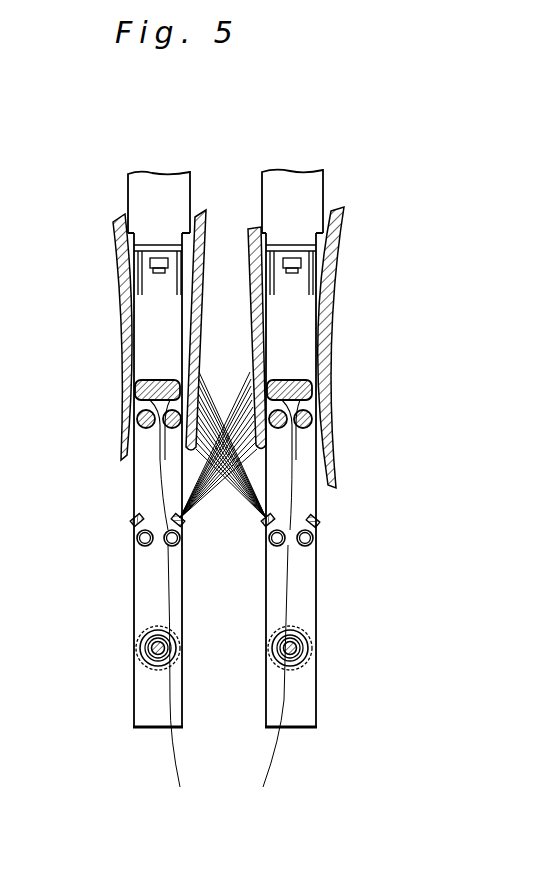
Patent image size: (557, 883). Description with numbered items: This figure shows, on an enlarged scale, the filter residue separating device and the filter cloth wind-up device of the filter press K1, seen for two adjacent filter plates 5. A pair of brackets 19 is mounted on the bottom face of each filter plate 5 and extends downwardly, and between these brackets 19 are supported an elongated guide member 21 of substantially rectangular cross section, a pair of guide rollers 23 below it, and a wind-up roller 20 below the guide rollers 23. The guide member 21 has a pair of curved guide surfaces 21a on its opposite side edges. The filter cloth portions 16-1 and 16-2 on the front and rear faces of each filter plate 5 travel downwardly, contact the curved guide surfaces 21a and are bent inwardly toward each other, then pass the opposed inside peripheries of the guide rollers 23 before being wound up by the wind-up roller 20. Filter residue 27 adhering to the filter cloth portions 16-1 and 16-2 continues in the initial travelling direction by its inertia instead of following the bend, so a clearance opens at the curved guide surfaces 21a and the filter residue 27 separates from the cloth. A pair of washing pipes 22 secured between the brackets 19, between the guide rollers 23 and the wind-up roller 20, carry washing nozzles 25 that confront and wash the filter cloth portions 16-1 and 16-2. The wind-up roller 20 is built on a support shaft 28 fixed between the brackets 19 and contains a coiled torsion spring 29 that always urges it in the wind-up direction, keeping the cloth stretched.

The filter plate 5 is at (140, 192).
The filter residue 27 is at (208, 216).
The bracket 19 is at (148, 311).
The guide member 21 is at (150, 376).
The curved guide surface 21a is at (147, 318).
The guide roller 23 is at (322, 421).
The filter press K1 is at (345, 455).
The filter cloth portion 16-1 is at (163, 455).
The filter cloth portion 16-2 is at (333, 277).
The washing nozzle 25 is at (132, 520).
The washing pipe 22 is at (140, 542).
The support shaft 28 is at (155, 648).
The wind-up roller 20 is at (147, 672).
The coiled torsion spring 29 is at (224, 760).